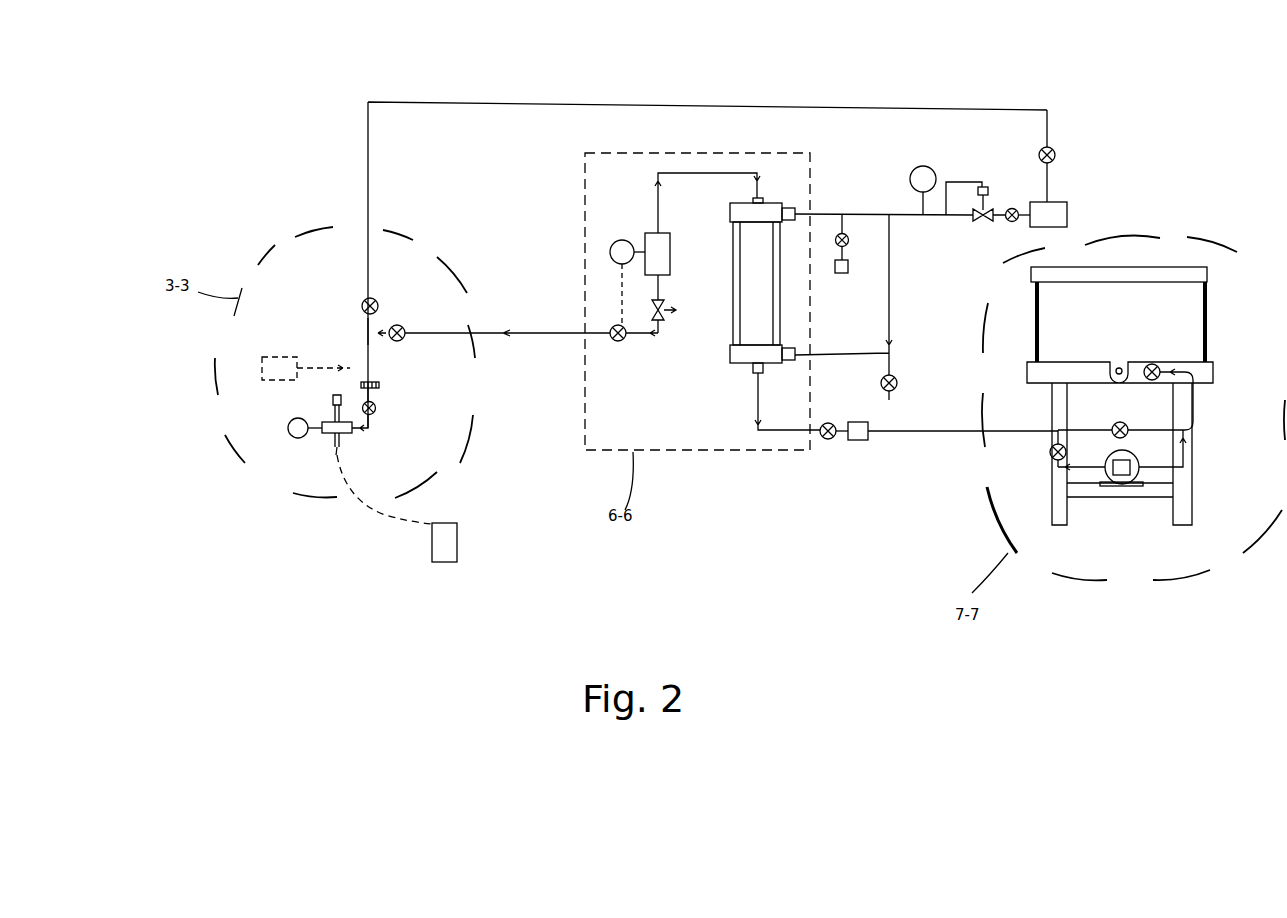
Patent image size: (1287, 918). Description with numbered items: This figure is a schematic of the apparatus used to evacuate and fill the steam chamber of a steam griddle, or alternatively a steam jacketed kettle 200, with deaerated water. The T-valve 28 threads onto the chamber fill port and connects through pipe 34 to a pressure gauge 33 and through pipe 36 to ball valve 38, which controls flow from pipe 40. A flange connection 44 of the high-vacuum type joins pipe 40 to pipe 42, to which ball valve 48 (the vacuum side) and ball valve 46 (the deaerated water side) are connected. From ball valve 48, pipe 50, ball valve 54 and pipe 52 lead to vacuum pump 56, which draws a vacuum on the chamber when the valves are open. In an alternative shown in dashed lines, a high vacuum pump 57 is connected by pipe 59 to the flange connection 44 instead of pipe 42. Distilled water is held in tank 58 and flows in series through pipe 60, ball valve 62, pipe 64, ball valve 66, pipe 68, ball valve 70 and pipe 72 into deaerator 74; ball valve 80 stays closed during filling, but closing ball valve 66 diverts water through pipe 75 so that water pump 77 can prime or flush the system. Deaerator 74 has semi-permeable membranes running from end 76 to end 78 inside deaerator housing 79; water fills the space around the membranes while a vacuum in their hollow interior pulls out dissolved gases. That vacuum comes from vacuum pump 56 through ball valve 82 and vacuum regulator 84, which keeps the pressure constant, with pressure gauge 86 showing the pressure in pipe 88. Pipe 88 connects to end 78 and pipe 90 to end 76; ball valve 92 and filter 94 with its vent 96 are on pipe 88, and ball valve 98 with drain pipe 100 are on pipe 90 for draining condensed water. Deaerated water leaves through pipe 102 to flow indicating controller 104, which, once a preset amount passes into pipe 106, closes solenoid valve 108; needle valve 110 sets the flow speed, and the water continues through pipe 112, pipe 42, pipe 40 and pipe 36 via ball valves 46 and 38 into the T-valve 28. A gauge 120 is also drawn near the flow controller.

The T-valve 28 is at (342, 440).
The pressure gauge 33 is at (288, 428).
The pipe 34 is at (322, 431).
The pipe 36 is at (372, 428).
The ball valve 38 is at (377, 408).
The pipe 40 is at (378, 393).
The pipe 42 is at (365, 340).
The flange connection 44 is at (380, 385).
The ball valve 46 is at (405, 328).
The ball valve 48 is at (362, 300).
The pipe 50 is at (523, 103).
The pipe 52 is at (1050, 190).
The ball valve 54 is at (1056, 155).
The vacuum pump 56 is at (1060, 220).
The high vacuum pump 57 is at (262, 368).
The tank 58 is at (1165, 326).
The pipe 59 is at (343, 366).
The pipe 60 is at (1120, 378).
The ball valve 62 is at (1153, 381).
The pipe 64 is at (1195, 400).
The ball valve 66 is at (1114, 425).
The pipe 68 is at (943, 433).
The ball valve 70 is at (828, 440).
The pipe 72 is at (758, 405).
The deaerator 74 is at (720, 345).
The pipe 75 is at (1190, 455).
The end 76 is at (751, 372).
The water pump 77 is at (1122, 475).
The end 78 is at (733, 214).
The deaerator housing 79 is at (762, 307).
The ball valve 80 is at (1052, 458).
The ball valve 82 is at (1010, 224).
The vacuum regulator 84 is at (978, 222).
The pressure gauge 86 is at (912, 176).
The pipe 88 is at (860, 215).
The pipe 90 is at (828, 353).
The ball valve 92 is at (850, 242).
The filter 94 is at (835, 272).
The vent 96 is at (845, 275).
The ball valve 98 is at (898, 383).
The drain pipe 100 is at (890, 395).
The pipe 102 is at (690, 153).
The flow indicating controller 104 is at (670, 258).
The pipe 106 is at (660, 290).
The solenoid valve 108 is at (620, 342).
The needle valve 110 is at (662, 315).
The pipe 112 is at (502, 333).
The pressure gauge 120 is at (610, 252).
The steam jacketed kettle 200 is at (456, 545).